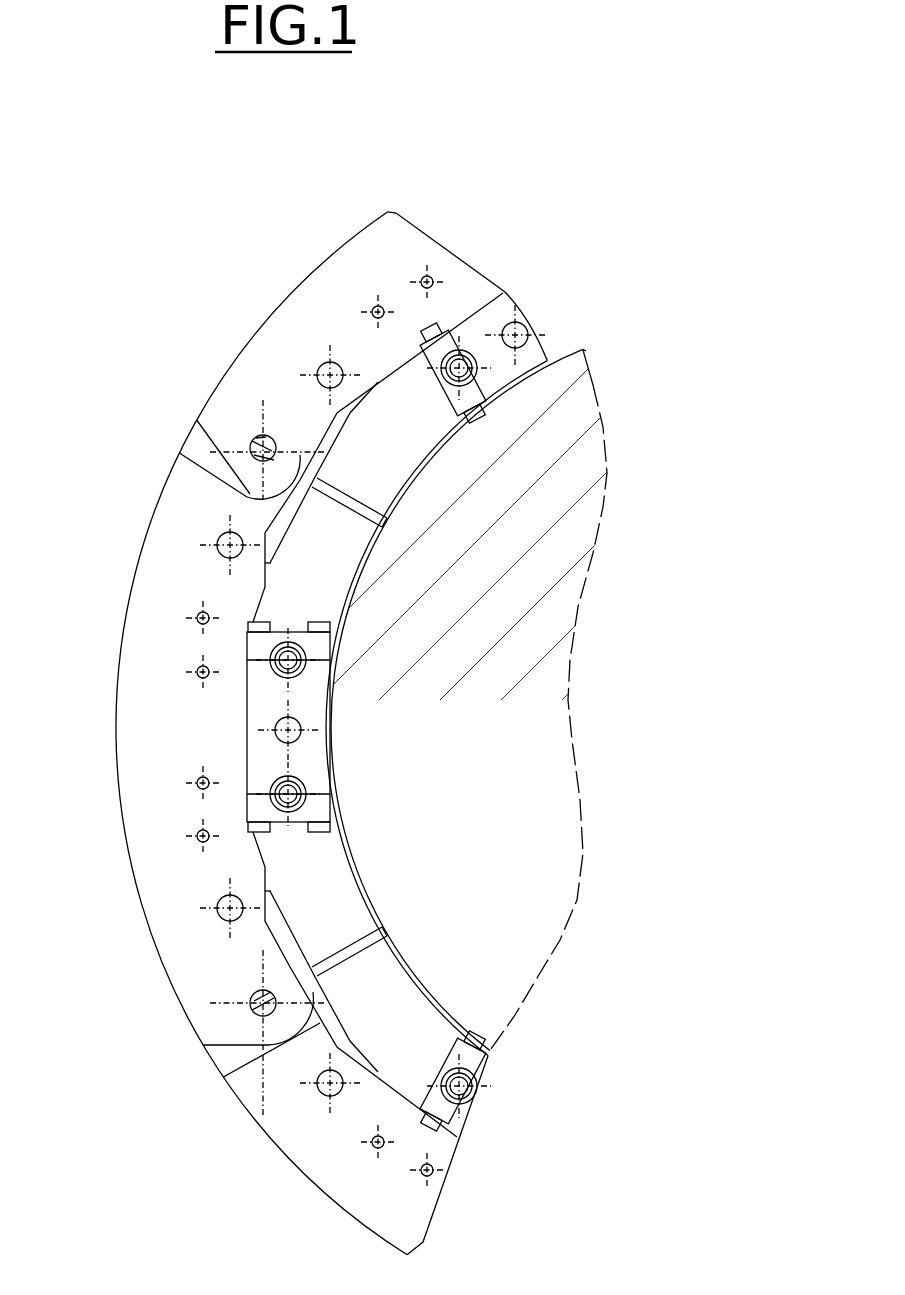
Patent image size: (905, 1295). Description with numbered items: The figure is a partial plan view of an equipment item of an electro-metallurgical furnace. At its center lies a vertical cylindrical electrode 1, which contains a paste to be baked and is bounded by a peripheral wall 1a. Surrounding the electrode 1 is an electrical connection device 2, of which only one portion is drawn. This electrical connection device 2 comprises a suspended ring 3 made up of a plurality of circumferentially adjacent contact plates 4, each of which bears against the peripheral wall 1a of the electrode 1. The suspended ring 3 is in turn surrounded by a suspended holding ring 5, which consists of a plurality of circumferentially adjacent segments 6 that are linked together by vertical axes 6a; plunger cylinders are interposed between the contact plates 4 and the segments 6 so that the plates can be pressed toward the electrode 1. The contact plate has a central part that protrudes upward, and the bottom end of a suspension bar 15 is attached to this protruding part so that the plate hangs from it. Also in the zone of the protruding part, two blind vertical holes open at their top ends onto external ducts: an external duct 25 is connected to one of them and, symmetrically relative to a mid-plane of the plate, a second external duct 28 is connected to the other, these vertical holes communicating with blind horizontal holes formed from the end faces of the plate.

The vertical cylindrical electrode 1 is at (560, 672).
The peripheral wall 1a is at (562, 360).
The electrical connection device 2 is at (185, 360).
The suspended ring 3 is at (300, 930).
The contact plates 4 is at (270, 857).
The suspended holding ring 5 is at (140, 605).
The segments 6 is at (122, 710).
The vertical axes 6a is at (253, 460).
The suspension bar 15 is at (270, 731).
The external duct 25 is at (280, 797).
The external duct 28 is at (270, 655).